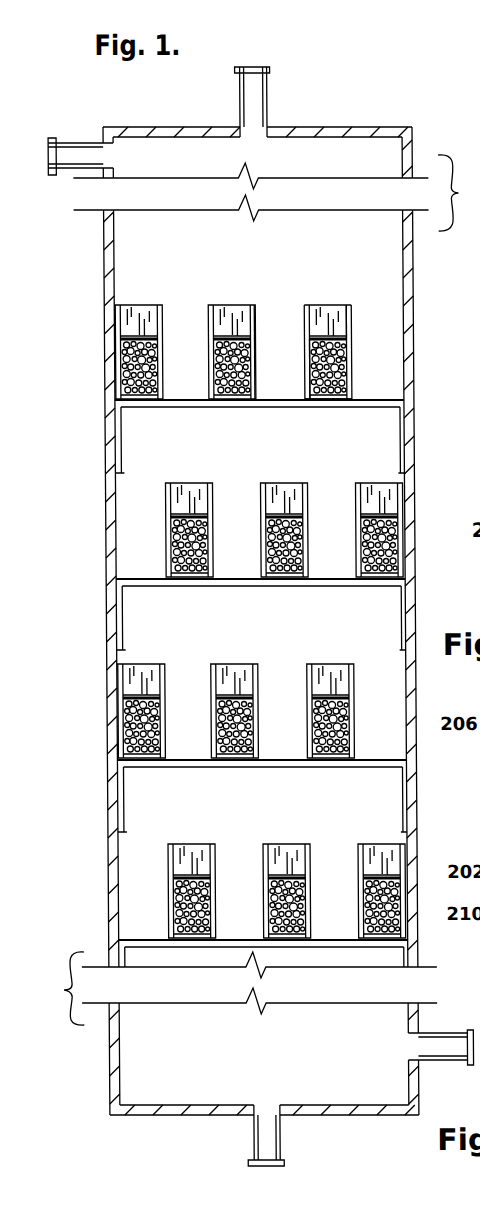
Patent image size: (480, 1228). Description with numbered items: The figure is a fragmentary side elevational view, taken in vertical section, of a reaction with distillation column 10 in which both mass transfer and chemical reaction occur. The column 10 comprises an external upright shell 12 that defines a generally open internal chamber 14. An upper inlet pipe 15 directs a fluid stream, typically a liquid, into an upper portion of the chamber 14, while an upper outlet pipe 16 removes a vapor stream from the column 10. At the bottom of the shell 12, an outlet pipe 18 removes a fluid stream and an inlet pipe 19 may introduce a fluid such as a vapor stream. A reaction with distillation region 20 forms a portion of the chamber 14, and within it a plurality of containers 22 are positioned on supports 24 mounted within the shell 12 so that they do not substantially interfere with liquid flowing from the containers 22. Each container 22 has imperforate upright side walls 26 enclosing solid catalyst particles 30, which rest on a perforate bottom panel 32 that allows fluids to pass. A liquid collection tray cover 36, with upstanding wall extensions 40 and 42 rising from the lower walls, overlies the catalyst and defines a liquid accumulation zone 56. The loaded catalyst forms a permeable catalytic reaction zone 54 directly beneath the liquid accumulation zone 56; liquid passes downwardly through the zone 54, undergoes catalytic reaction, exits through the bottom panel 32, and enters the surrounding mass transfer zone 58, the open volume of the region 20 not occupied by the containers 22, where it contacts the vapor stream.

The reaction with distillation column 10 is at (352, 102).
The external upright shell 12 is at (407, 254).
The internal chamber 14 is at (358, 160).
The upper inlet pipe 15 is at (56, 142).
The upper outlet pipe 16 is at (240, 90).
The outlet pipe 18 is at (273, 1136).
The inlet pipe 19 is at (427, 1032).
The reaction with distillation region 20 is at (129, 256).
The containers 22 is at (260, 605).
The supports 24 is at (376, 402).
The upright side walls 26 is at (323, 352).
The solid catalyst particles 30 is at (352, 369).
The perforate bottom panel 32 is at (328, 415).
The liquid collection tray cover 36 is at (336, 288).
The wall extension 40 is at (350, 315).
The wall extension 42 is at (322, 306).
The catalytic reaction zone 54 is at (287, 369).
The liquid accumulation zone 56 is at (367, 324).
The mass transfer zone 58 is at (153, 474).